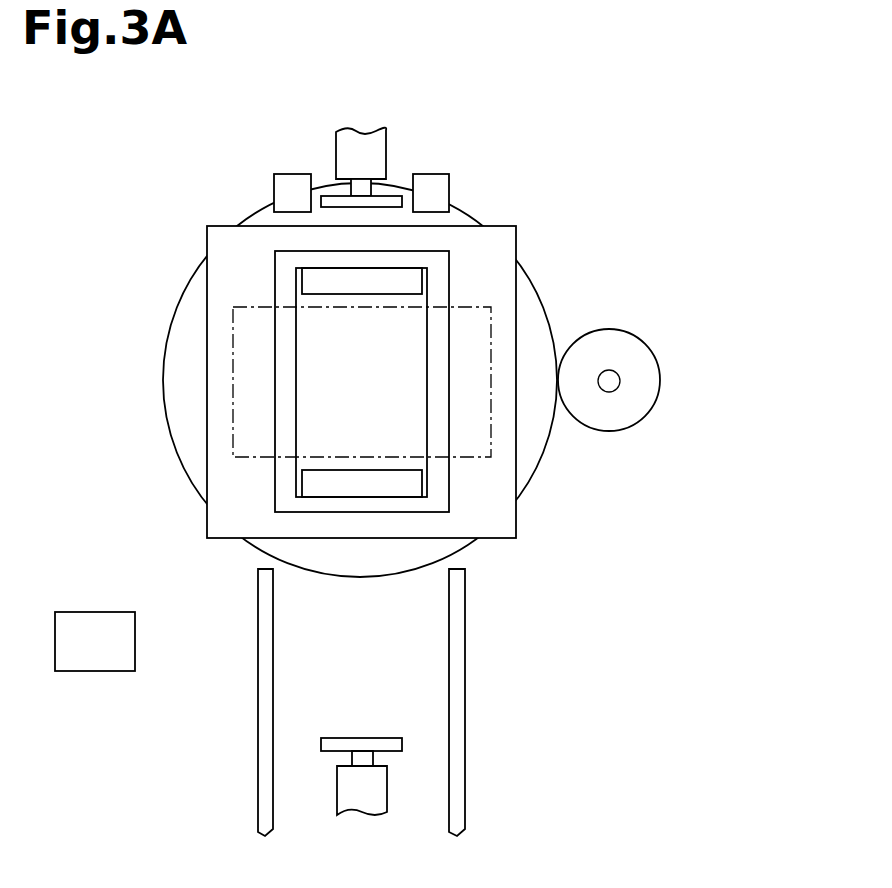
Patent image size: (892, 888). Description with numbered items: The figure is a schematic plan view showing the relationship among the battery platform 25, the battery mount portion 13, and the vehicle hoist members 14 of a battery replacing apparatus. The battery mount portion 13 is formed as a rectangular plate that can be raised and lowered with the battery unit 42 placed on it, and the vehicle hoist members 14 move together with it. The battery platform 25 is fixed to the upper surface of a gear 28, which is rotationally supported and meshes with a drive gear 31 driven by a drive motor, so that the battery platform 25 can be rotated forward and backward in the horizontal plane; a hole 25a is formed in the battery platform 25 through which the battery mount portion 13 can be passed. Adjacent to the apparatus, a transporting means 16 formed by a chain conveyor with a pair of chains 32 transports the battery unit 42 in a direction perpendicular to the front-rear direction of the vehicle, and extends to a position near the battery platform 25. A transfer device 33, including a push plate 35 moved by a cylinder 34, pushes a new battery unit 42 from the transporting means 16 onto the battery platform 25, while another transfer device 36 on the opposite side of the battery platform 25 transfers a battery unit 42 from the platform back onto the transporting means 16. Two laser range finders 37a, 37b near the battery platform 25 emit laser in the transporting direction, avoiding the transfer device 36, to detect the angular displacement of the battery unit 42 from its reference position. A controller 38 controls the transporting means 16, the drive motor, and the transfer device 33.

The battery mount portion 13 is at (428, 292).
The vehicle hoist members 14 is at (312, 282).
The transporting means 16 is at (519, 678).
The battery platform 25 is at (505, 242).
The hole 25a is at (440, 478).
The gear 28 is at (537, 304).
The drive gear 31 is at (652, 385).
The chains 32 is at (262, 600).
The transfer device 33 is at (392, 795).
The cylinder 34 is at (345, 790).
The push plate 35 is at (338, 738).
The transfer device 36 is at (389, 147).
The laser range finder 37a is at (284, 185).
The laser range finder 37b is at (440, 186).
The controller 38 is at (95, 612).
The battery unit 42 is at (492, 433).